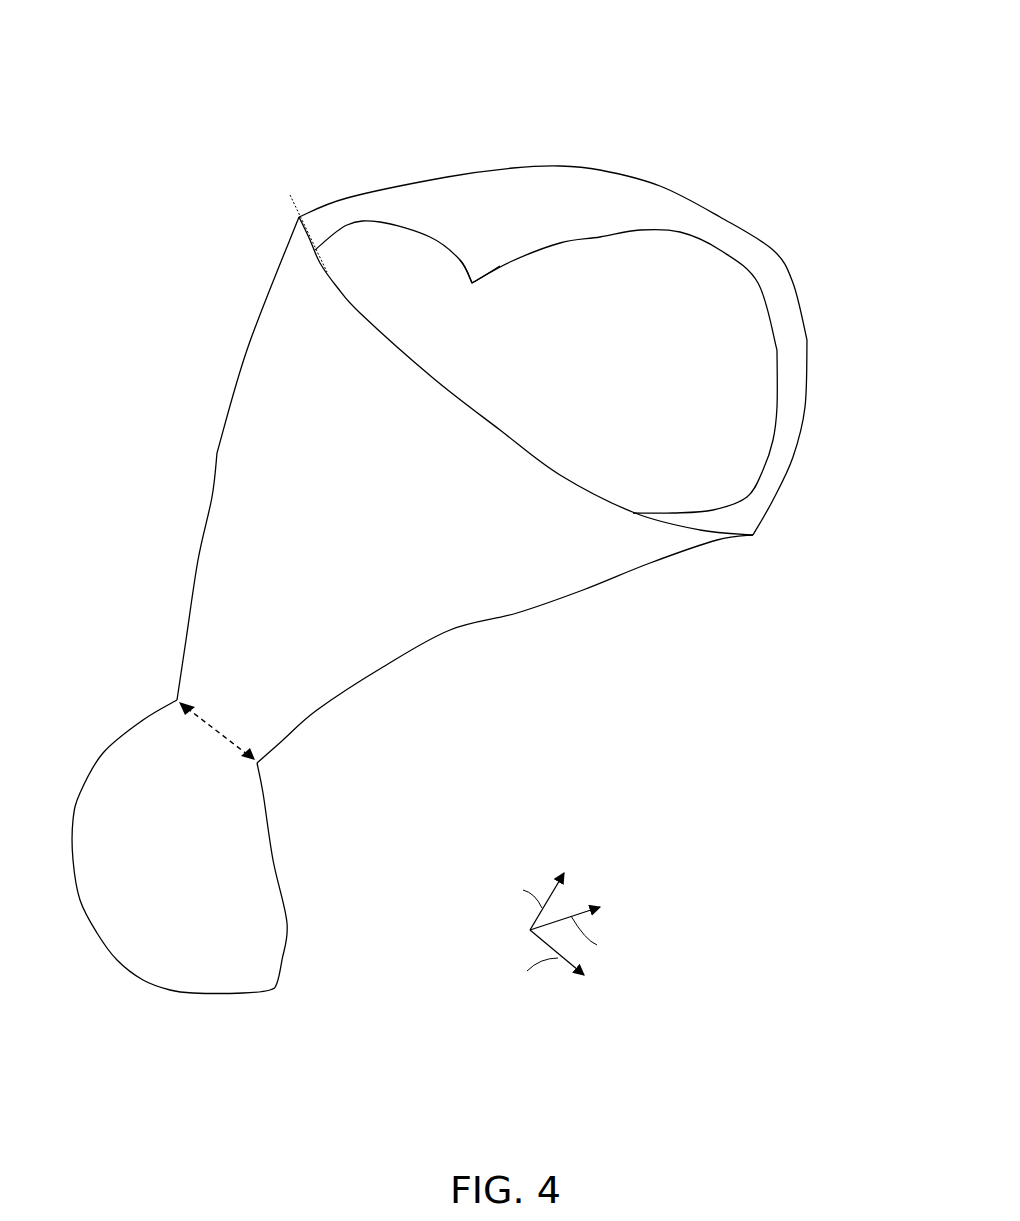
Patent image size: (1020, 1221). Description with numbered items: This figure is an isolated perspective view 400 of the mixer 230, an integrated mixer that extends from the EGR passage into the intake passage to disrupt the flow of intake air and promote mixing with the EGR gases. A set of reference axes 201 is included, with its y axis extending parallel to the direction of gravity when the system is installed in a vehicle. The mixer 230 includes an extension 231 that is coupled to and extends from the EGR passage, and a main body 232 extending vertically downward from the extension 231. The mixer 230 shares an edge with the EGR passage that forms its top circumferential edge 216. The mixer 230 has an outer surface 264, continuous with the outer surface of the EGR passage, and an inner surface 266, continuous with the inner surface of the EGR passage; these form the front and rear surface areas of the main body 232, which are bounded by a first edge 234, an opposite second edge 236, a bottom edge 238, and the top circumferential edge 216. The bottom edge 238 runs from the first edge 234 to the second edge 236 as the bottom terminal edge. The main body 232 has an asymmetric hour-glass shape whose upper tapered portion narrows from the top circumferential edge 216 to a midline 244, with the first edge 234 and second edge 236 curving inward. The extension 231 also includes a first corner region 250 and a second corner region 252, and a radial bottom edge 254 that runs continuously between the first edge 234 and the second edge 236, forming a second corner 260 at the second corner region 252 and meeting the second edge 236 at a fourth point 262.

The isolated perspective view 400 is at (809, 50).
The mixer 230 is at (315, 136).
The second corner region 252 is at (509, 149).
The extension 231 is at (721, 221).
The inner surface 266 is at (655, 218).
The fourth point 262 is at (315, 252).
The radial bottom edge 254 is at (600, 238).
The second corner 260 is at (473, 284).
The top circumferential edge 216 is at (433, 378).
The main body 232 is at (264, 363).
The outer surface 264 is at (383, 496).
The second edge 236 is at (213, 498).
The first corner region 250 is at (717, 481).
The first edge 234 is at (450, 631).
The midline 244 is at (211, 722).
The bottom edge 238 is at (188, 994).
The reference axes 201 is at (589, 870).